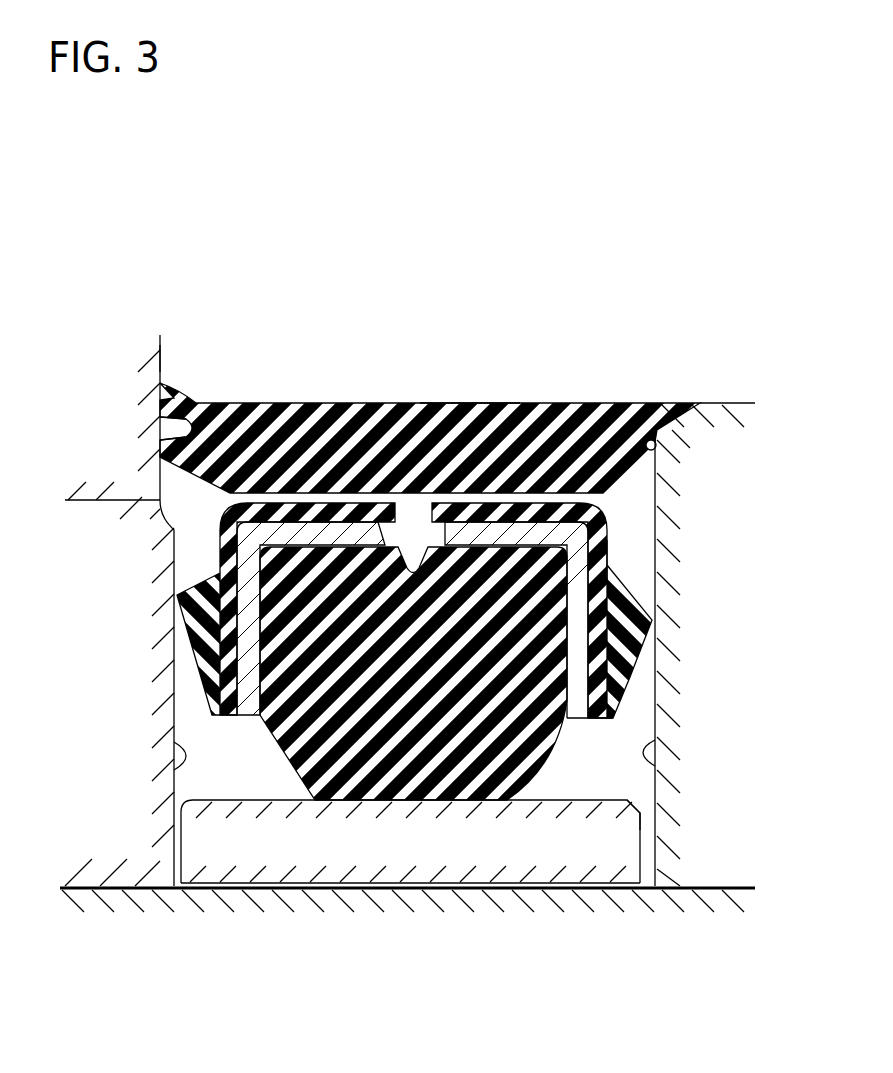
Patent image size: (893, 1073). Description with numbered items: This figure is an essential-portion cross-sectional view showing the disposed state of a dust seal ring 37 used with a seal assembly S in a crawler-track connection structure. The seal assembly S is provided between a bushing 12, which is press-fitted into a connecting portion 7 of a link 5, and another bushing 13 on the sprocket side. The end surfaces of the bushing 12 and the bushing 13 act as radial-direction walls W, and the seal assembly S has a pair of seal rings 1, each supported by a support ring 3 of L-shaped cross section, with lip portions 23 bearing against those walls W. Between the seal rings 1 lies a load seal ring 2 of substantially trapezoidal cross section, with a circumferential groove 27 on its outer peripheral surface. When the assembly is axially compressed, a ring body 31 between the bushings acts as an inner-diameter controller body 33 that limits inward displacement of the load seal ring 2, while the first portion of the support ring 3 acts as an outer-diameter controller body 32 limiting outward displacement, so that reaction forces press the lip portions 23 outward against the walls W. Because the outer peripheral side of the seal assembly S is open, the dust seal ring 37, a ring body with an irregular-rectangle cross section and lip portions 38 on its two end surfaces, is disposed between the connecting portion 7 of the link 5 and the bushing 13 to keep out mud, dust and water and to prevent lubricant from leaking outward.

The link 5 is at (112, 367).
The connecting portion 7 is at (160, 358).
The lip portion 38 is at (170, 397).
The outer-diameter controller body 32 is at (328, 425).
The dust seal ring 37 is at (468, 398).
The seal ring 1 is at (225, 516).
The circumferential groove 27 is at (412, 560).
The seal assembly S is at (625, 570).
The bushing 12 is at (113, 576).
The bushing 13 is at (741, 598).
The lip portion 23 is at (185, 629).
The radial-direction wall W is at (174, 760).
The support ring 3 is at (248, 724).
The load seal ring 2 is at (459, 804).
The ring body 31 is at (622, 818).
The inner-diameter controller body 33 is at (627, 842).